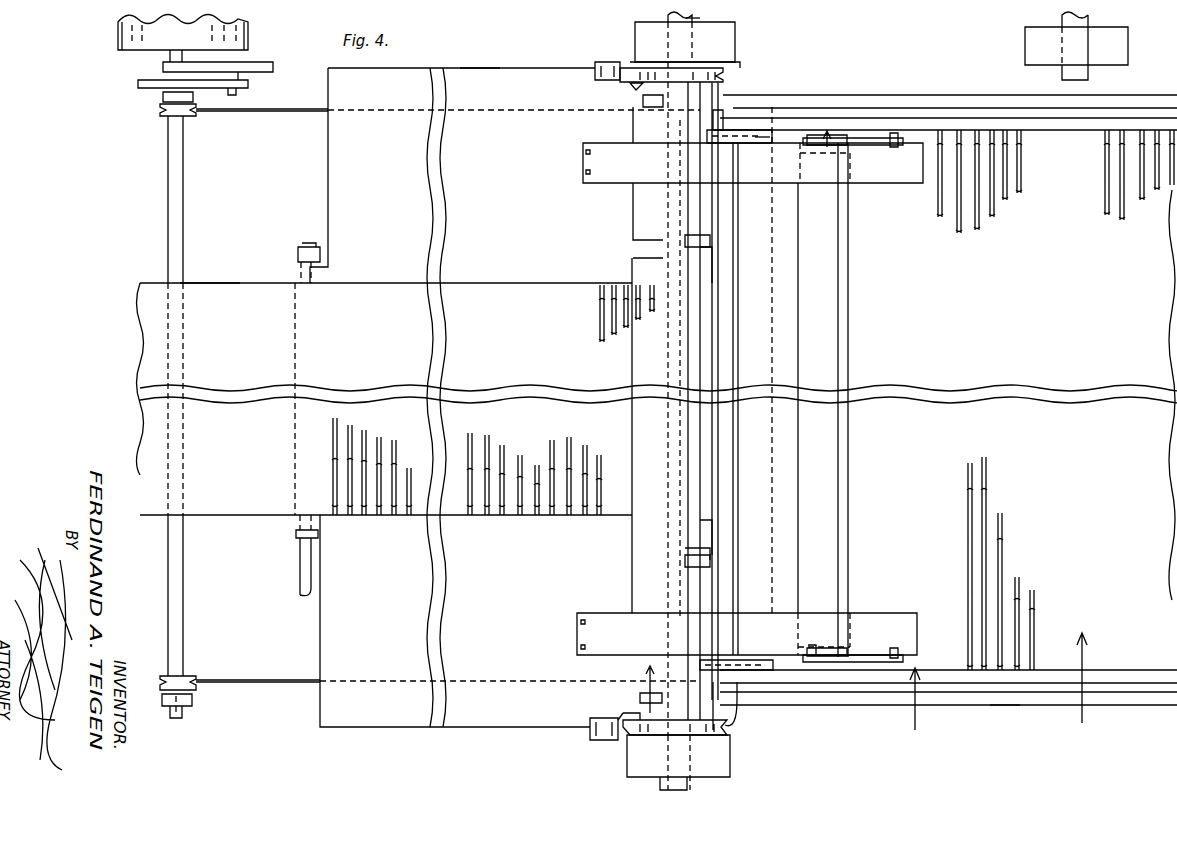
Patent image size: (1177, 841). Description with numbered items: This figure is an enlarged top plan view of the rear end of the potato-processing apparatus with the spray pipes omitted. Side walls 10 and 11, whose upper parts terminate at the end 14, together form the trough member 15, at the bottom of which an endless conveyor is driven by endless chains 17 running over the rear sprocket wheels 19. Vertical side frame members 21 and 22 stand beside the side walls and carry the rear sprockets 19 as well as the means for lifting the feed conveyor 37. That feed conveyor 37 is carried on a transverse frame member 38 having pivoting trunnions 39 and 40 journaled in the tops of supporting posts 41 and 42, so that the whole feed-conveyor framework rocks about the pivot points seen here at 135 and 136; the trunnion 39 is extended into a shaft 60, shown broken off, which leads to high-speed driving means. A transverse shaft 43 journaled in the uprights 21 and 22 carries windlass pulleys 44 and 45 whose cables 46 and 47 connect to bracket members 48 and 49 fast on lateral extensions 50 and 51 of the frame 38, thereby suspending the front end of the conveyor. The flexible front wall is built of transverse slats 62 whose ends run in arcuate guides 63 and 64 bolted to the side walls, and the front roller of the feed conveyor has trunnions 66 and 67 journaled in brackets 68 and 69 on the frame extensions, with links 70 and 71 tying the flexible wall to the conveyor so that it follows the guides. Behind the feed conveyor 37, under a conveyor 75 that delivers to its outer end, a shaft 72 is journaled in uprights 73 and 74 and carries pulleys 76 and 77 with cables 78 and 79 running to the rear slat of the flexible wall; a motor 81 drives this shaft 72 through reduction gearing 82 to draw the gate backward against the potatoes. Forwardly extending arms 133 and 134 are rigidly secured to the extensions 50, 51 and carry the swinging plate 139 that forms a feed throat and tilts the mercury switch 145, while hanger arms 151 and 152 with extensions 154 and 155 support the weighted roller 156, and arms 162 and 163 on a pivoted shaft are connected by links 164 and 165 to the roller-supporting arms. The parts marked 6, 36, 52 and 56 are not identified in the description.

The direction arrow 6 is at (919, 710).
The side wall 10 is at (885, 100).
The side wall 11 is at (1003, 700).
The end of side wall 14 is at (640, 697).
The trough member 15 is at (1077, 687).
The endless chains 17 is at (850, 127).
The rear sprocket wheels 19 is at (765, 127).
The side frame member 21 is at (645, 37).
The side frame member 22 is at (637, 757).
The rail bar 36 is at (965, 106).
The feed conveyor 37 is at (385, 399).
The transverse frame member 38 is at (345, 165).
The pivoting trunnion 39 is at (300, 534).
The pivoting trunnion 40 is at (300, 266).
The supporting post 41 is at (283, 548).
The supporting post 42 is at (300, 257).
The transverse shaft 43 is at (660, 213).
The windlass pulley 44 is at (648, 697).
The windlass pulley 45 is at (643, 85).
The cable 46 is at (612, 717).
The cable 47 is at (625, 78).
The bracket member 48 is at (590, 736).
The bracket member 49 is at (596, 70).
The lateral extension 50 is at (490, 725).
The lateral extension 51 is at (480, 77).
The shaft end 52 is at (700, 18).
The bearing block 56 is at (1082, 72).
The shaft 60 is at (305, 586).
The transverse slats 62 is at (715, 343).
The arcuate guide 63 is at (723, 112).
The arcuate guide 64 is at (728, 735).
The trunnion 66 is at (690, 523).
The trunnion 67 is at (712, 292).
The bracket 68 is at (700, 548).
The bracket 69 is at (703, 262).
The link 70 is at (703, 565).
The link 71 is at (706, 240).
The shaft 72 is at (168, 212).
The upright 73 is at (192, 702).
The upright 74 is at (163, 97).
The conveyor 75 is at (210, 283).
The pulley 76 is at (162, 676).
The pulley 77 is at (163, 116).
The cable 78 is at (265, 680).
The cable 79 is at (268, 110).
The motor 81 is at (120, 33).
The reduction gearing 82 is at (250, 62).
The forwardly extending arm 133 is at (867, 183).
The forwardly extending arm 134 is at (872, 622).
The pivot point 135 is at (292, 285).
The pivot point 136 is at (298, 527).
The swinging plate 139 is at (738, 360).
The mercury switch 145 is at (762, 137).
The hanger arm 151 is at (812, 145).
The hanger arm 152 is at (812, 662).
The extension 154 is at (827, 148).
The extension 155 is at (840, 655).
The weighted roller 156 is at (846, 445).
The outwardly extending arm 162 is at (870, 672).
The outwardly extending arm 163 is at (875, 136).
The link 164 is at (895, 650).
The link 165 is at (894, 147).